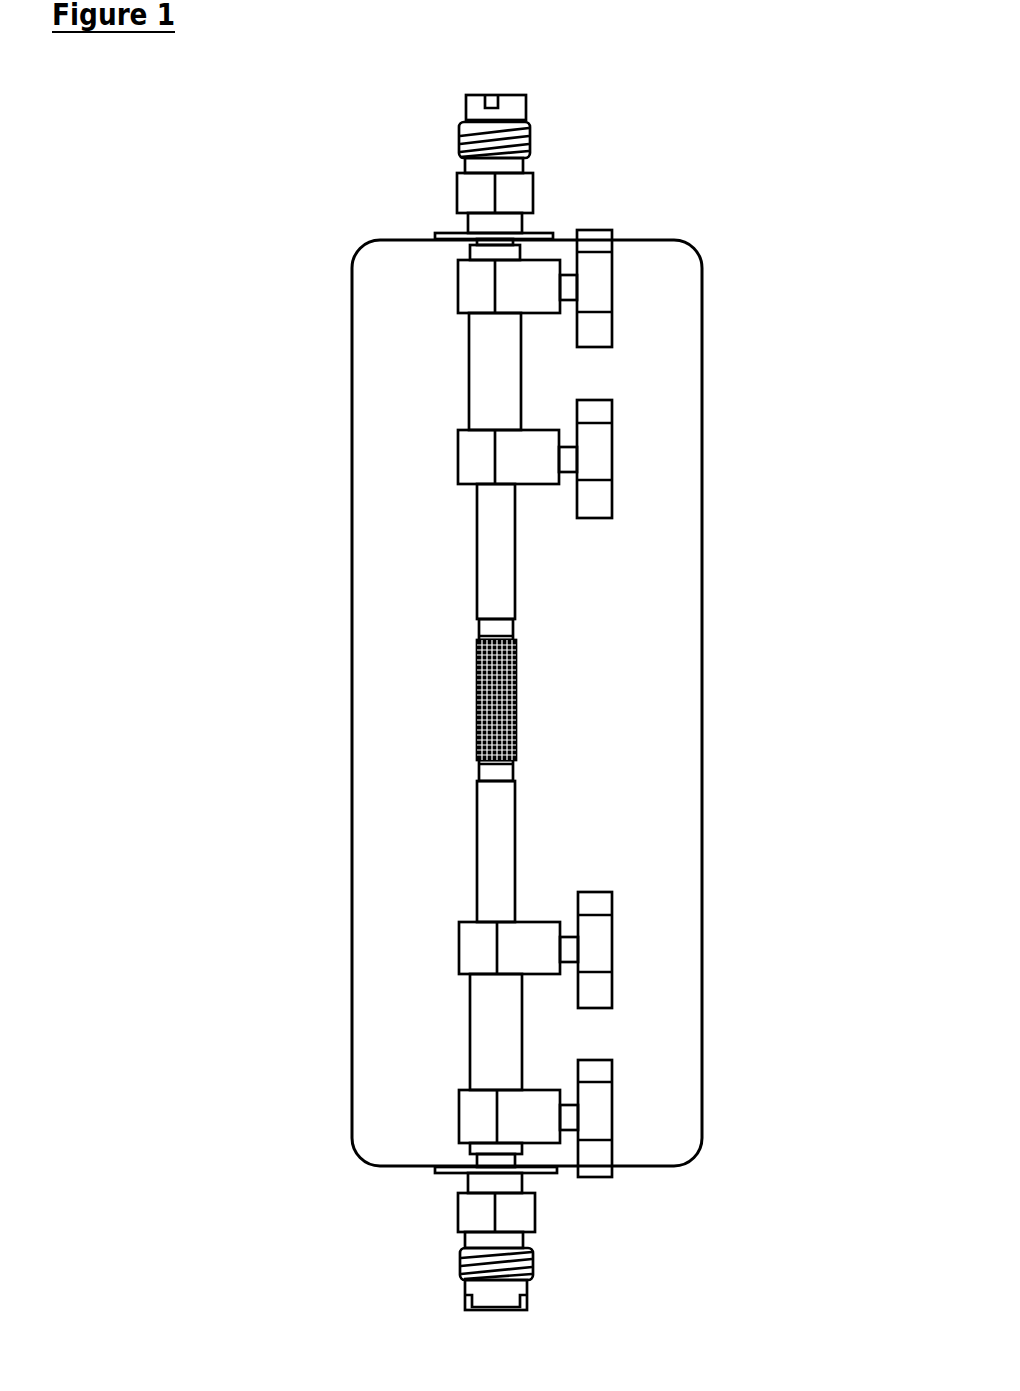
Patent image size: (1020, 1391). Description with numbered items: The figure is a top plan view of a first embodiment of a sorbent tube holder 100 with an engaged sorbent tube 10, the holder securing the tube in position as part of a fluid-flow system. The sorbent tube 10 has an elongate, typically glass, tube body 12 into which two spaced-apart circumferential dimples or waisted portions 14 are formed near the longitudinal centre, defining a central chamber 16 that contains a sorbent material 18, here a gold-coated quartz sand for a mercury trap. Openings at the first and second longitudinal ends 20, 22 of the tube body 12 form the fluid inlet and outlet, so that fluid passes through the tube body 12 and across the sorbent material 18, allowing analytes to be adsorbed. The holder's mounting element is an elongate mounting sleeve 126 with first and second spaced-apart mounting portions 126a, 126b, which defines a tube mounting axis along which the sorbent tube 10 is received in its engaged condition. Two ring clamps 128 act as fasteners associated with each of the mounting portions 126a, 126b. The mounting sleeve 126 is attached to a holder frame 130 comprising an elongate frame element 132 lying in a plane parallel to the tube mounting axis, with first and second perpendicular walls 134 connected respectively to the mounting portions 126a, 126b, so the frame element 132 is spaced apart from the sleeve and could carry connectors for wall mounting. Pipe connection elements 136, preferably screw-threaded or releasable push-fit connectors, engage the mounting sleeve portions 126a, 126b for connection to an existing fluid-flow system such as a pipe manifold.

The sorbent tube holder 100 is at (152, 230).
The sorbent tube 10 is at (477, 591).
The tube body 12 is at (503, 857).
The waisted portions 14 is at (488, 629).
The central chamber 16 is at (515, 690).
The sorbent material 18 is at (505, 727).
The first longitudinal end 20 is at (466, 258).
The second longitudinal end 22 is at (490, 1158).
The mounting sleeve 126 is at (348, 701).
The first mounting portion 126a is at (479, 394).
The second mounting portion 126b is at (479, 1035).
The ring clamps 128 is at (598, 282).
The holder frame 130 is at (340, 937).
The frame element 132 is at (678, 530).
The perpendicular walls 134 is at (553, 237).
The pipe connection elements 136 is at (457, 133).